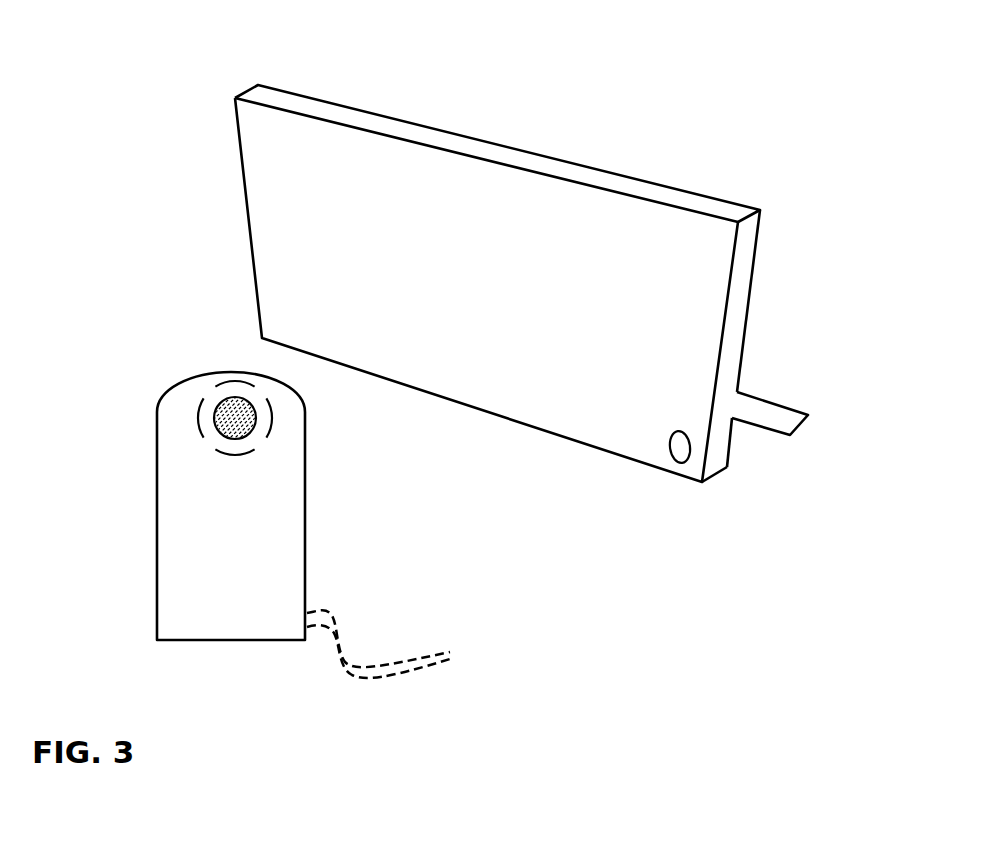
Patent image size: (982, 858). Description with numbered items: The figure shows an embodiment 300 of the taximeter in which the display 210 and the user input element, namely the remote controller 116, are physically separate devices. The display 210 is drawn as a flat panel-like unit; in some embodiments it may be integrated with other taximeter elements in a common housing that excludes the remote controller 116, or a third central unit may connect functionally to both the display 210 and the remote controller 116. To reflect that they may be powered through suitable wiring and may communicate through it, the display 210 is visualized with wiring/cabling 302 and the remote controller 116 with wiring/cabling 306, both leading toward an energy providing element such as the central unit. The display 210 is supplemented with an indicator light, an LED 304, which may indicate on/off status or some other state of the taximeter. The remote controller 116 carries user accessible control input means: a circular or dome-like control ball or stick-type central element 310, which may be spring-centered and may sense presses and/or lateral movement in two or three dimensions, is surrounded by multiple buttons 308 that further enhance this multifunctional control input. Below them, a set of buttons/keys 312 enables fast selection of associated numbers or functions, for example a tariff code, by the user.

The taximeter embodiment 300 is at (107, 47).
The display 210 is at (277, 175).
The wiring/cabling 302 is at (782, 420).
The LEDs 304 is at (680, 447).
The wiring/cabling 306 is at (432, 655).
The buttons 308 is at (193, 417).
The central element 310 is at (228, 422).
The buttons/keys 312 is at (187, 557).
The remote controller 116 is at (283, 440).